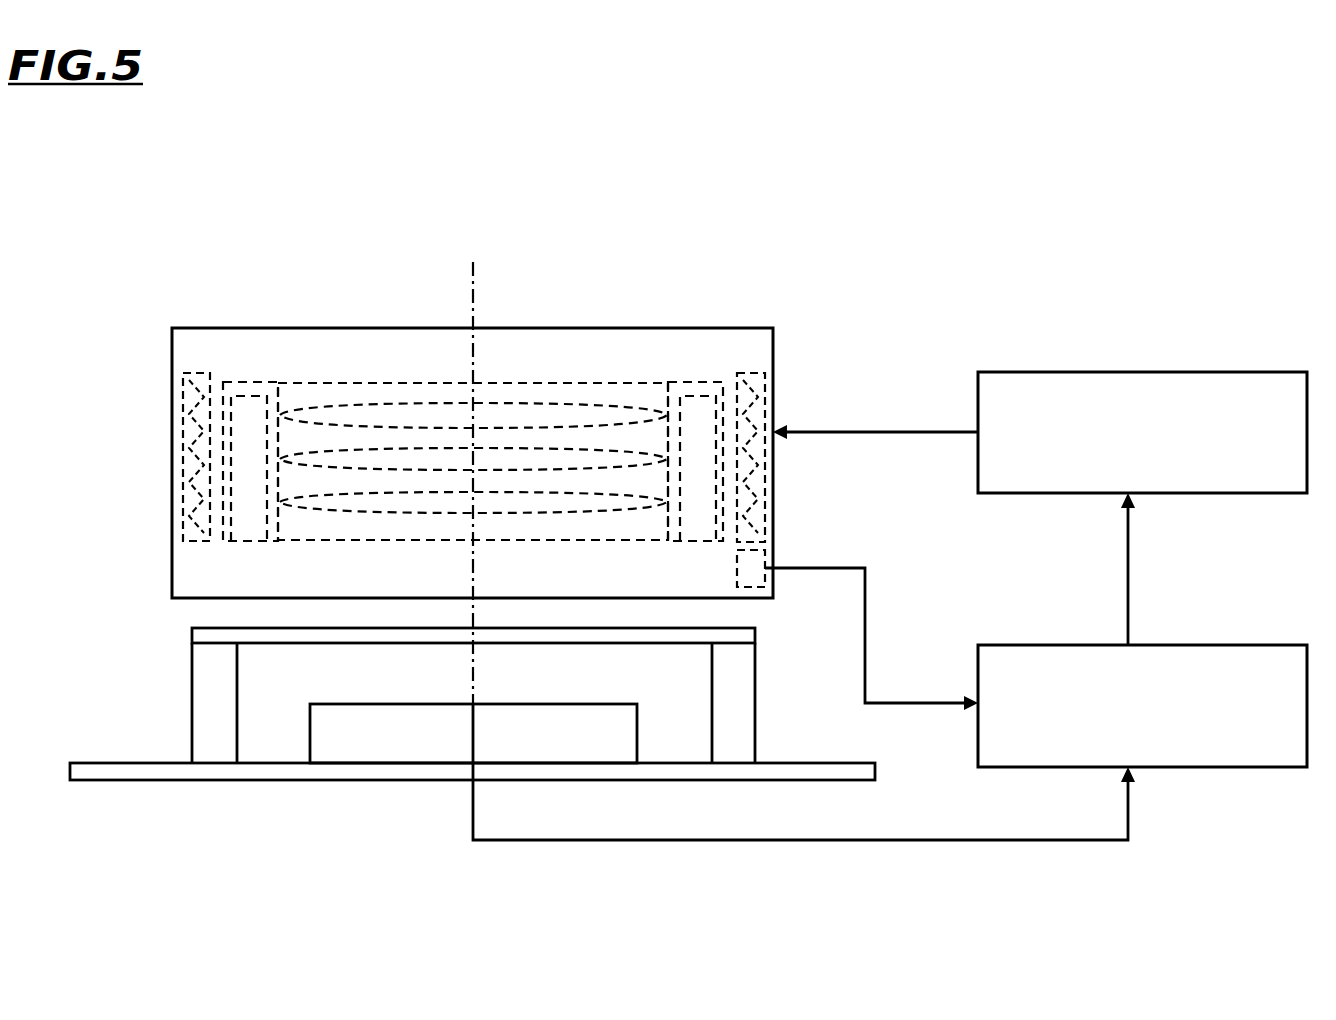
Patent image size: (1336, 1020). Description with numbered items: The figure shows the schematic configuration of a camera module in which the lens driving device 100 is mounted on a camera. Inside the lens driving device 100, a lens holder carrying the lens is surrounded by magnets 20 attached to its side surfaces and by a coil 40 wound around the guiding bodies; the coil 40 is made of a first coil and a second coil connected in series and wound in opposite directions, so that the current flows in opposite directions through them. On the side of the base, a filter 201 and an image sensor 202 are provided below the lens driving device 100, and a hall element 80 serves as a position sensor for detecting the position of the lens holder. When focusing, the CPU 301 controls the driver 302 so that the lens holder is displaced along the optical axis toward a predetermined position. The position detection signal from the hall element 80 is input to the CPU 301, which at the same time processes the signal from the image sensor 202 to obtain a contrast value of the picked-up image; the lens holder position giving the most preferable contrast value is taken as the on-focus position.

The lens driving device 100 is at (527, 312).
The magnet 20 is at (245, 382).
The coil 40 is at (197, 373).
The hall element 80 is at (763, 552).
The filter 201 is at (192, 632).
The image sensor 202 is at (310, 745).
The CPU 301 is at (1188, 645).
The driver 302 is at (1172, 372).